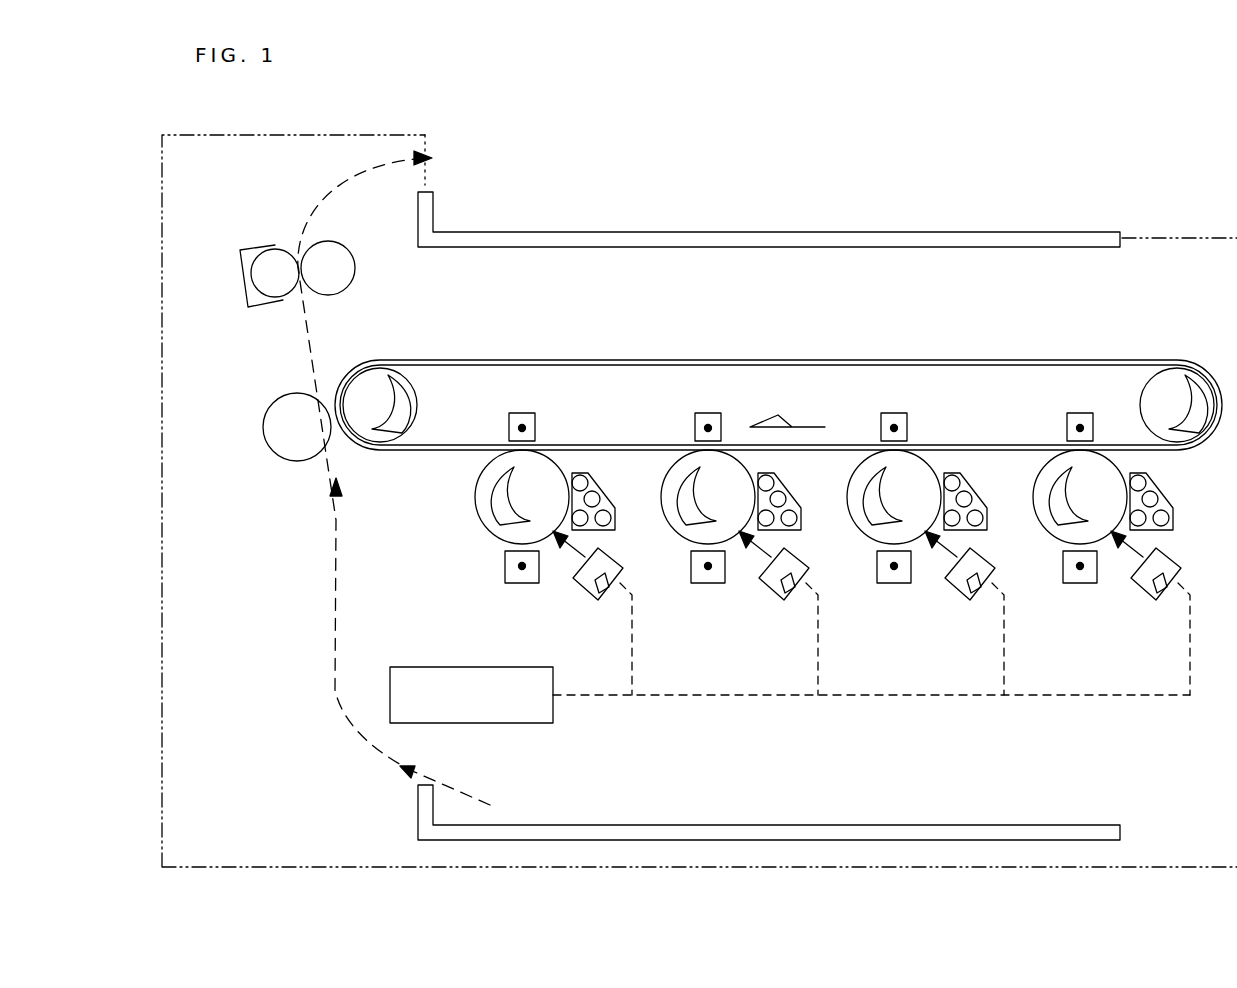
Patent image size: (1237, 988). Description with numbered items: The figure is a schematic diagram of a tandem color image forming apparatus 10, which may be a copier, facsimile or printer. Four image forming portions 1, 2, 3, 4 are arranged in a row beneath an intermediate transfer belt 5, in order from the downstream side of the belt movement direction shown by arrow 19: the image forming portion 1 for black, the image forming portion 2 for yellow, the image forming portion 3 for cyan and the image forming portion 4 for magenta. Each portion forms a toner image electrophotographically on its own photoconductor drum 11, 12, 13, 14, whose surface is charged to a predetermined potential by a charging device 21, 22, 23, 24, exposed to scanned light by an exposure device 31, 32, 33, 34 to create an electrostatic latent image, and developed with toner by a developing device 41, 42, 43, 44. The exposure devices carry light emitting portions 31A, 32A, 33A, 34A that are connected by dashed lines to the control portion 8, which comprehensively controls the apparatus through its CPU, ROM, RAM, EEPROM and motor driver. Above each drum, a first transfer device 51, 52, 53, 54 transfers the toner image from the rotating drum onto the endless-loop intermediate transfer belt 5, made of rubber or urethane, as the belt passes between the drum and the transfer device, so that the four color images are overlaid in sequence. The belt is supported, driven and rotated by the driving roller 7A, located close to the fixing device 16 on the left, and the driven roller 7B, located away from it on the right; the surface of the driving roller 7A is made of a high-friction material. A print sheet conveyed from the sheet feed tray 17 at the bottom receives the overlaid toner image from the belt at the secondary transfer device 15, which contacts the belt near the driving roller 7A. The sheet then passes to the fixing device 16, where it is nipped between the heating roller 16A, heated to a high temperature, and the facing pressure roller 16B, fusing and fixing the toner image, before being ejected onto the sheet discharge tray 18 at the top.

The image forming apparatus 10 is at (1178, 176).
The image forming portion 1 is at (567, 584).
The image forming portion 2 is at (753, 584).
The image forming portion 3 is at (939, 584).
The image forming portion 4 is at (1125, 584).
The intermediate transfer belt 5 is at (862, 360).
The driving roller 7A is at (405, 377).
The driven roller 7B is at (1160, 375).
The control portion 8 is at (390, 690).
The photoconductor drum 11 is at (478, 482).
The photoconductor drum 12 is at (664, 482).
The photoconductor drum 13 is at (850, 482).
The photoconductor drum 14 is at (1036, 482).
The secondary transfer device 15 is at (285, 395).
The fixing device 16 is at (289, 238).
The heating roller 16A is at (343, 240).
The pressure roller 16B is at (262, 250).
The sheet feed tray 17 is at (690, 824).
The sheet discharge tray 18 is at (690, 231).
The arrow 19 is at (803, 426).
The charging device 21 is at (519, 583).
The charging device 22 is at (705, 583).
The charging device 23 is at (891, 583).
The charging device 24 is at (1077, 583).
The exposure device 31 is at (622, 574).
The exposure device 32 is at (808, 574).
The exposure device 33 is at (994, 574).
The exposure device 34 is at (1180, 574).
The light emitting element 31A is at (602, 593).
The light emitting element 32A is at (788, 593).
The light emitting element 33A is at (974, 593).
The light emitting element 34A is at (1160, 593).
The developing device 41 is at (616, 486).
The developing device 42 is at (802, 486).
The developing device 43 is at (988, 486).
The developing device 44 is at (1174, 486).
The first transfer device 51 is at (519, 412).
The first transfer device 52 is at (705, 412).
The first transfer device 53 is at (891, 412).
The first transfer device 54 is at (1077, 412).